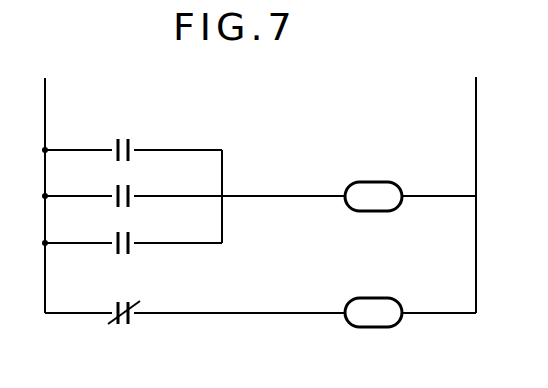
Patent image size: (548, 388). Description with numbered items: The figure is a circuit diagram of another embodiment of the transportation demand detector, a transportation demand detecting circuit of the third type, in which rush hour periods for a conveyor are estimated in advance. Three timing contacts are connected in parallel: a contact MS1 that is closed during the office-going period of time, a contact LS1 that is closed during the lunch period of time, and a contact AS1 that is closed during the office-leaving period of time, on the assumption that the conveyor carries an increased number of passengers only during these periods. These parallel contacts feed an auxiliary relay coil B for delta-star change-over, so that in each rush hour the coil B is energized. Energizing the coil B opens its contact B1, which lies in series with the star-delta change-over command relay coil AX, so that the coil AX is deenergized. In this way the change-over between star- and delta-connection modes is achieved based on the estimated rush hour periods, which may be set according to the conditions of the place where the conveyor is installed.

The contact MS1 is at (126, 137).
The contact LS1 is at (125, 187).
The contact AS1 is at (123, 232).
The contact B1 is at (120, 300).
The auxiliary relay coil for delta-star change-over B is at (351, 182).
The star-delta change-over command relay coil AX is at (357, 298).